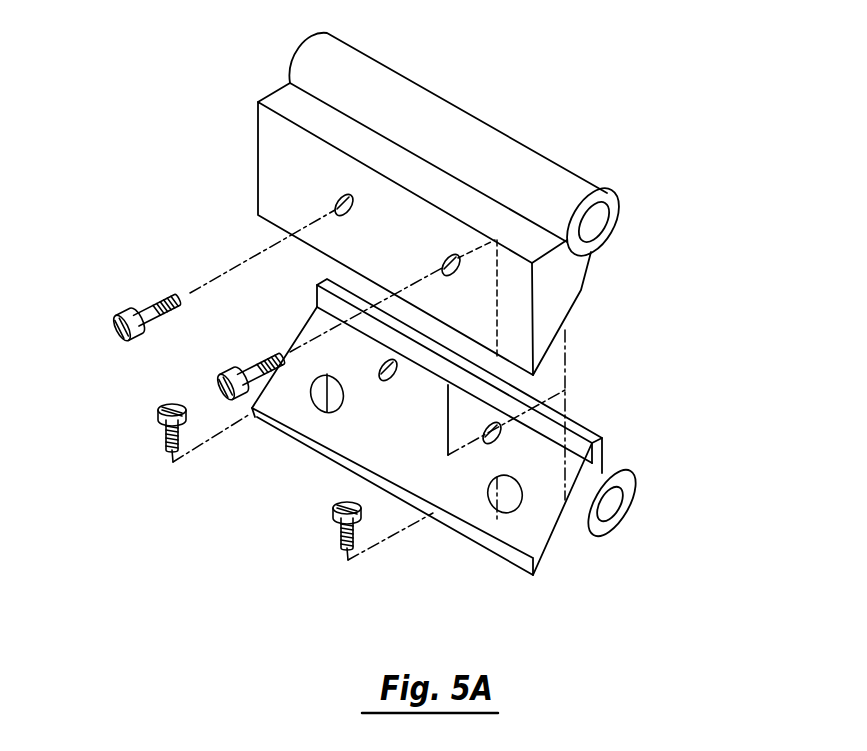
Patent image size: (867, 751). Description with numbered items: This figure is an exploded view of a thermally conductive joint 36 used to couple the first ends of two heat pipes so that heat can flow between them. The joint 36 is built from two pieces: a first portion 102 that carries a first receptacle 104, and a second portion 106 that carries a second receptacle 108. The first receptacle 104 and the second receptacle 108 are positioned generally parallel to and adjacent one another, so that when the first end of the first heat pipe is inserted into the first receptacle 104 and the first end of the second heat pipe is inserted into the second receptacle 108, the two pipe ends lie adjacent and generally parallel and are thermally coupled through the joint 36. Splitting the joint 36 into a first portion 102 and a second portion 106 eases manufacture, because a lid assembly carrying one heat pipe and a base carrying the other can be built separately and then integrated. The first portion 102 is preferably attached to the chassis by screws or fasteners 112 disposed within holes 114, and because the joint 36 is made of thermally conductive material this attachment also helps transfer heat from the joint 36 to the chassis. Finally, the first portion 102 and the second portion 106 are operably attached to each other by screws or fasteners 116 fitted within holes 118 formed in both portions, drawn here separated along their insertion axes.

The thermally conductive joint 36 is at (179, 144).
The first portion 102 is at (562, 538).
The first receptacle 104 is at (612, 507).
The second portion 106 is at (568, 277).
The second receptacle 108 is at (596, 222).
The screws or fasteners 112 is at (160, 437).
The holes 114 is at (338, 398).
The screws or fasteners 116 is at (121, 315).
The holes 118 is at (343, 197).